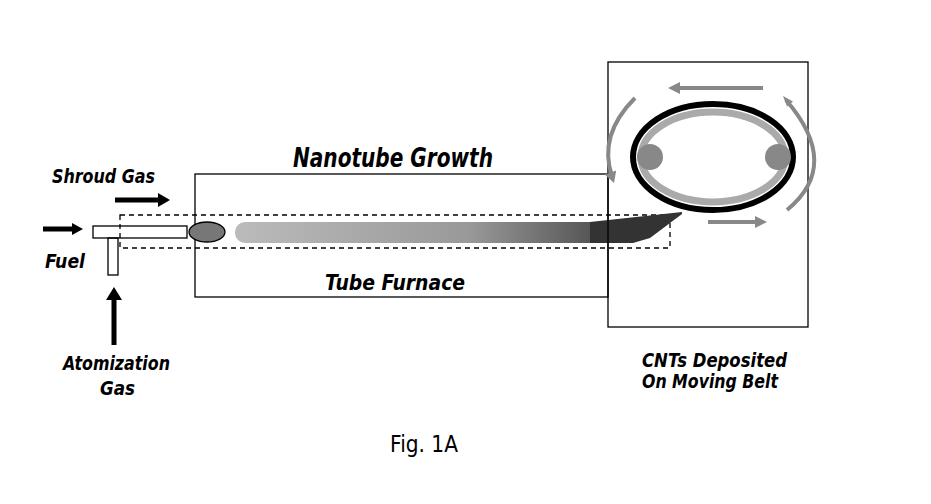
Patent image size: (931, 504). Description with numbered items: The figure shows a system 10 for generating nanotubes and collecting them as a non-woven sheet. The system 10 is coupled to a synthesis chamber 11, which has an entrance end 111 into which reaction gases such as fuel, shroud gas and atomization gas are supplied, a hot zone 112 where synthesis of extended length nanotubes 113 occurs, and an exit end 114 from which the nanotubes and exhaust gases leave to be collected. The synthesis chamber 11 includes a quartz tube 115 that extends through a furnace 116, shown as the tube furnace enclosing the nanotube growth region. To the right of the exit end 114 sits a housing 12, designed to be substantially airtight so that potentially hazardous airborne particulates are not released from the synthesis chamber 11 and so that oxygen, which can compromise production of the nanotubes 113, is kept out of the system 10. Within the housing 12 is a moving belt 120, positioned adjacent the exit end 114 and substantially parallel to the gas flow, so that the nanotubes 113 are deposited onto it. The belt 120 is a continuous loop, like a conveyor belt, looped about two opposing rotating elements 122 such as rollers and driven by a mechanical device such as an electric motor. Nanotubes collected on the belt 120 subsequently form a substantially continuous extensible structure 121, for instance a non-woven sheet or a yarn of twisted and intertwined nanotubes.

The system 10 is at (342, 83).
The synthesis chamber 11 is at (208, 215).
The housing 12 is at (727, 62).
The entrance end 111 is at (125, 250).
The hot zone 112 is at (562, 208).
The nanotubes 113 is at (678, 218).
The exit end 114 is at (677, 247).
The quartz tube 115 is at (278, 250).
The furnace 116 is at (478, 300).
The moving belt 120 is at (763, 185).
The continuous extensible structure 121 is at (656, 112).
The rotating elements 122 is at (665, 152).